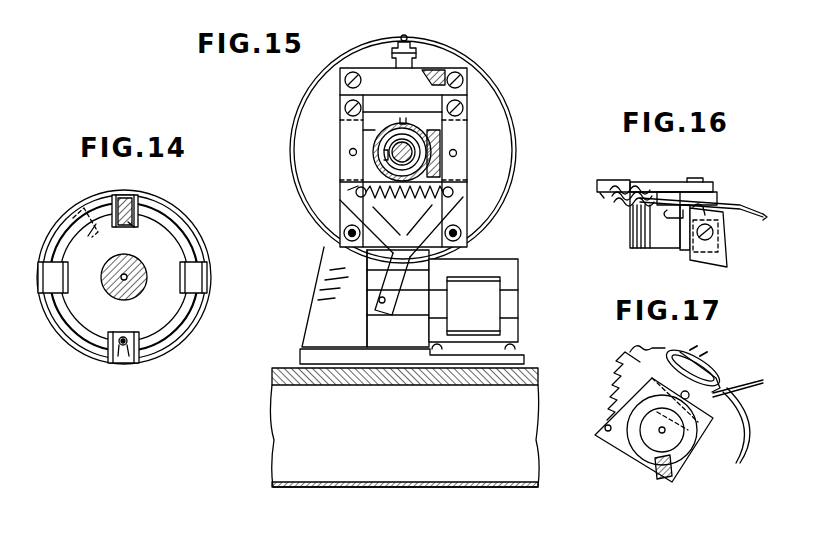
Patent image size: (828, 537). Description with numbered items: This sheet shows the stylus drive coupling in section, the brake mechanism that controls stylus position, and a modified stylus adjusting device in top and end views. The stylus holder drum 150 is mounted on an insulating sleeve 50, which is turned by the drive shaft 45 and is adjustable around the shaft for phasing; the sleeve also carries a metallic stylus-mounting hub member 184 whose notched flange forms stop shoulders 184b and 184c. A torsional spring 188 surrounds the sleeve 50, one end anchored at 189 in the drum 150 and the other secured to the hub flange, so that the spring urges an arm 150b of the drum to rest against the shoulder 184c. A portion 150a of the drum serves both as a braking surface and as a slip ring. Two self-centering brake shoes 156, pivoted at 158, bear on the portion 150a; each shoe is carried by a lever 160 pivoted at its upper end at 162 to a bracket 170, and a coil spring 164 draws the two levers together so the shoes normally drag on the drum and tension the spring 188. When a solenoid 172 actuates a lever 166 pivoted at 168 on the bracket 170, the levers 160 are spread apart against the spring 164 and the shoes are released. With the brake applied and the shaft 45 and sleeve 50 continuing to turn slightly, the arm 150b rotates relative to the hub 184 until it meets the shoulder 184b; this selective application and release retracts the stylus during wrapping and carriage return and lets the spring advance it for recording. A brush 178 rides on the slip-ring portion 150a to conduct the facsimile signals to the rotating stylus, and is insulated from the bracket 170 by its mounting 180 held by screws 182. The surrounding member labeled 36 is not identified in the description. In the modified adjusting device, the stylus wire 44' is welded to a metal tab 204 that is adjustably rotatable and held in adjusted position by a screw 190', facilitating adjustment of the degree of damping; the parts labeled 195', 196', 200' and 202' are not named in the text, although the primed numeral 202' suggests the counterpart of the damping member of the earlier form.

In FIG. 15, the housing 36 is at (490, 70).
In FIG. 15, the drive shaft 45 is at (390, 160).
In FIG. 15, the sleeve 50 is at (396, 150).
In FIG. 14, the stylus holder drum 150 is at (130, 193).
In FIG. 15, the stylus holder drum 150 is at (396, 128).
In FIG. 14, the drum portion 150a is at (68, 237).
In FIG. 15, the drum portion 150a is at (360, 182).
In FIG. 14, the arm 150b is at (137, 212).
In FIG. 15, the brake shoes 156 is at (440, 135).
In FIG. 15, the brake shoe pivot 158 is at (458, 153).
In FIG. 15, the lever 160 is at (342, 215).
In FIG. 15, the lever pivot 162 is at (345, 108).
In FIG. 15, the coil spring 164 is at (445, 190).
In FIG. 15, the lever 166 is at (393, 283).
In FIG. 15, the pivot 168 is at (403, 237).
In FIG. 15, the bracket 170 is at (325, 318).
In FIG. 15, the solenoid 172 is at (478, 300).
In FIG. 15, the brush 178 is at (403, 118).
In FIG. 15, the brush mounting 180 is at (432, 72).
In FIG. 15, the screws 182 is at (355, 71).
In FIG. 14, the stylus-mounting hub member 184 is at (102, 305).
In FIG. 14, the stop shoulder 184b is at (91, 238).
In FIG. 14, the stop shoulder 184c is at (140, 218).
In FIG. 14, the torsional spring 188 is at (115, 345).
In FIG. 14, the spring anchor 189 is at (128, 345).
In FIG. 16, the screw 190' is at (738, 242).
In FIG. 17, the screw 190' is at (714, 358).
In FIG. 17, the tab 195' is at (645, 483).
In FIG. 16, the coil body 196' is at (652, 222).
In FIG. 17, the coil body 196' is at (640, 433).
In FIG. 16, the spring 200' is at (627, 176).
In FIG. 17, the spring 200' is at (618, 383).
In FIG. 16, the wire arm 202' is at (701, 184).
In FIG. 17, the wire arm 202' is at (750, 432).
In FIG. 16, the metal tab 204 is at (702, 260).
In FIG. 17, the metal tab 204 is at (717, 390).
In FIG. 16, the stylus wire 44' is at (771, 199).
In FIG. 17, the stylus wire 44' is at (745, 396).